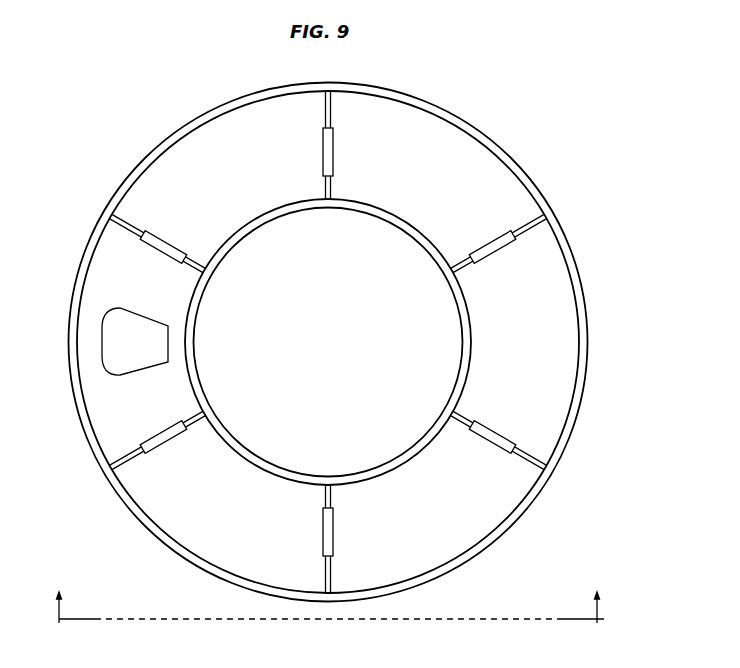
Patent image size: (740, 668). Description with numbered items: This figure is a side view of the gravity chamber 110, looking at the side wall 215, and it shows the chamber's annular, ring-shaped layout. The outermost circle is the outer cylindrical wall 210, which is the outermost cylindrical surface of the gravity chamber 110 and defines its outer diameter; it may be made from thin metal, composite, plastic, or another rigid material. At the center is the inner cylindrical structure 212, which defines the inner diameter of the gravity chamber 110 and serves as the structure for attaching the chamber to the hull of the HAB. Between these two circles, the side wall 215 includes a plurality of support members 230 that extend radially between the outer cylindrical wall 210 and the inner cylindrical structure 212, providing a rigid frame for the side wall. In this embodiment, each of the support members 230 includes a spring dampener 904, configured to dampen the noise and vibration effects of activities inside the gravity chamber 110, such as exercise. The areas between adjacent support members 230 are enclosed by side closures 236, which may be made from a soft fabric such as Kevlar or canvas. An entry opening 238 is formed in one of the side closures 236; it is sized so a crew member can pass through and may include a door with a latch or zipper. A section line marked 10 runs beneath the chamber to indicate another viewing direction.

The housing 210 is at (369, 74).
The central opening 212 is at (346, 213).
The struts 230 is at (326, 118).
The actuators 904 is at (333, 166).
The compartments 236 is at (201, 148).
The port 238 is at (140, 347).
The annular cavity 215 is at (100, 409).
The engine 110 is at (645, 514).
The section line 10 is at (328, 622).